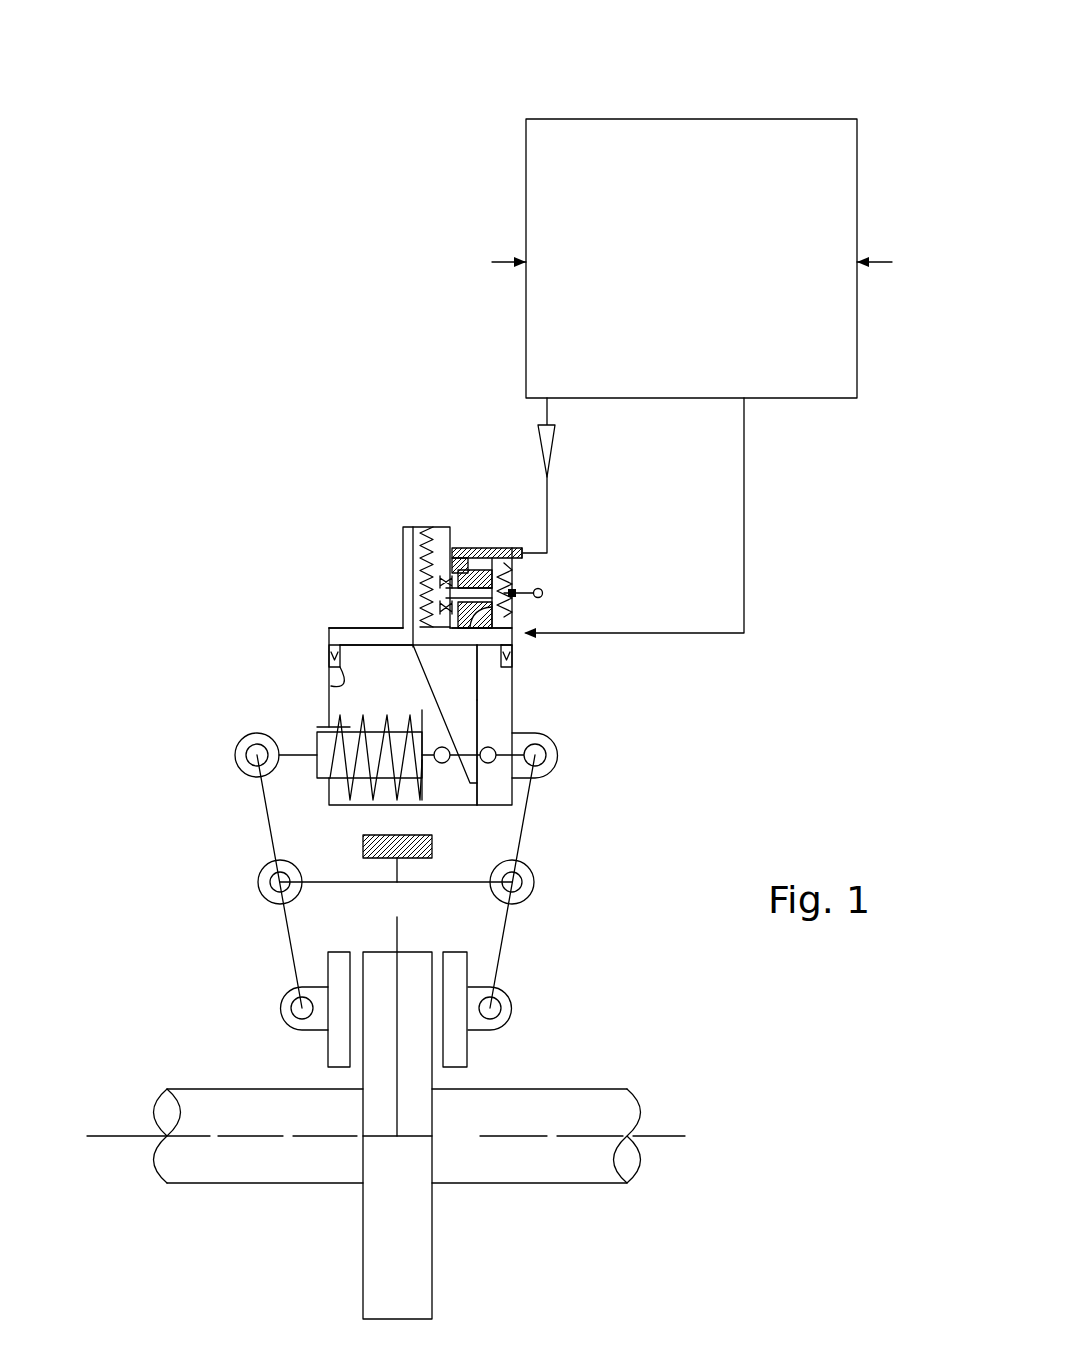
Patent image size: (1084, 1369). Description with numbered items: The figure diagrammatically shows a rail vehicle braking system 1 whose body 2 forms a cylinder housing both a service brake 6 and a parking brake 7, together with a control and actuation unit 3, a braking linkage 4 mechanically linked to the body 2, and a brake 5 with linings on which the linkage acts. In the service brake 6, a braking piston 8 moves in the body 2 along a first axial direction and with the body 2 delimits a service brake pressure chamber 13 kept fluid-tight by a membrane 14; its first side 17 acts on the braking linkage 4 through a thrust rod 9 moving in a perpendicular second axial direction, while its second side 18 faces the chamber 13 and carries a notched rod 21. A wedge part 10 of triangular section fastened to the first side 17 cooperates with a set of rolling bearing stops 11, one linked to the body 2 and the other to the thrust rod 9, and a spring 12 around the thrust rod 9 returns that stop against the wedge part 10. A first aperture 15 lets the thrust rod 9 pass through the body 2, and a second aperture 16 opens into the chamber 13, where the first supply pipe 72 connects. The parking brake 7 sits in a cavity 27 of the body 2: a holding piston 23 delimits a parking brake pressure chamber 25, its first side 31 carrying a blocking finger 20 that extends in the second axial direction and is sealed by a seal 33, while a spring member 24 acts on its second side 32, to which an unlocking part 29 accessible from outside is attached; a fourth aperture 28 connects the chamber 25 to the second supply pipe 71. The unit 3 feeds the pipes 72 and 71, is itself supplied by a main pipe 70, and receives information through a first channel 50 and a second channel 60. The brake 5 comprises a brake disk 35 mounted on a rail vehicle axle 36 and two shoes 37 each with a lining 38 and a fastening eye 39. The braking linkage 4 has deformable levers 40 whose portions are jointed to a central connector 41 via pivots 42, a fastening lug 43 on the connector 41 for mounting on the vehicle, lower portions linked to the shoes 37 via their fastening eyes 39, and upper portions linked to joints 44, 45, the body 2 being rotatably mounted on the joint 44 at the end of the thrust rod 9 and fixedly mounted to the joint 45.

The rail vehicle braking system 1 is at (242, 422).
The body 2 is at (512, 722).
The control and actuation unit 3 is at (414, 52).
The braking linkage 4 is at (165, 826).
The brake 5 is at (198, 998).
The service brake 6 is at (180, 686).
The parking brake 7 is at (515, 452).
The service brake piston 8 is at (383, 647).
The thrust rod 9 is at (315, 740).
The wedge part 10 is at (480, 688).
The rolling bearing stops 11 is at (488, 763).
The spring 12 is at (377, 783).
The service brake pressure chamber 13 is at (348, 628).
The membrane 14 is at (505, 665).
The first aperture 15 is at (302, 780).
The second aperture 16 is at (333, 655).
The first side 17 is at (333, 677).
The second side 18 is at (385, 645).
The blocking finger 20 is at (466, 565).
The notched rod 21 is at (415, 527).
The holding piston 23 is at (508, 648).
The spring member 24 is at (540, 633).
The parking brake pressure chamber 25 is at (488, 562).
The cavity 27 is at (512, 566).
The fourth aperture 28 is at (525, 551).
The unlocking part 29 is at (543, 593).
The first side 31 is at (473, 630).
The second side 32 is at (505, 549).
The seal 33 is at (447, 576).
The brake disk 35 is at (363, 1258).
The rail vehicle axle 36 is at (195, 1183).
The shoes 37 is at (230, 972).
The lining 38 is at (340, 960).
The fastening eye 39 is at (291, 1022).
The deformable levers 40 is at (525, 820).
The central connector 41 is at (438, 884).
The pivots 42 is at (257, 880).
The fastening lug 43 is at (363, 850).
The joint 44 is at (235, 755).
The joint 45 is at (553, 757).
The first channel 50 is at (503, 262).
The second channel 60 is at (882, 262).
The main pipe 70 is at (692, 119).
The second supply pipe 71 is at (547, 497).
The first supply pipe 72 is at (744, 484).